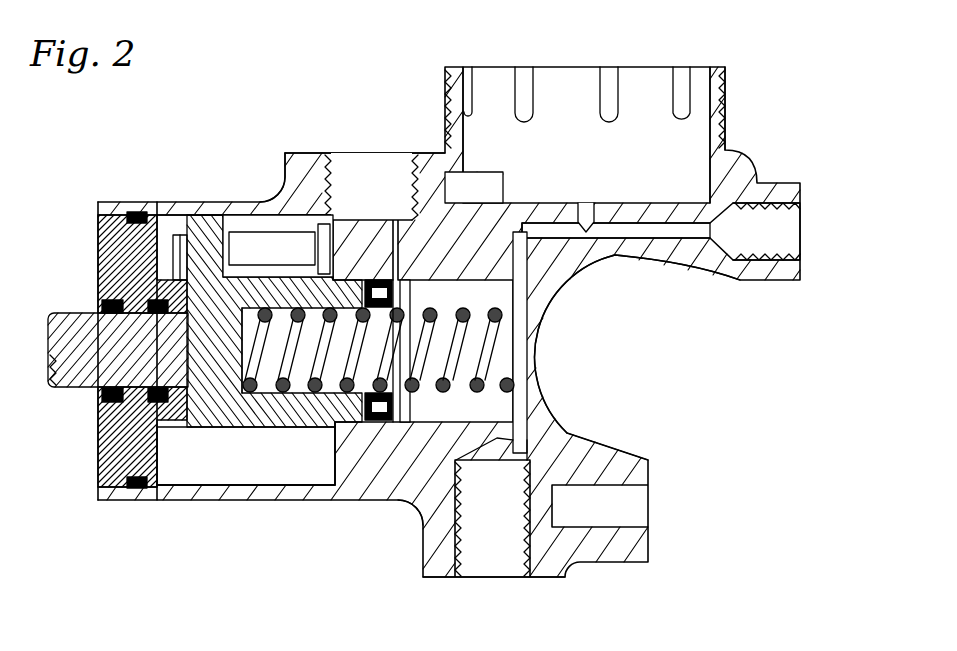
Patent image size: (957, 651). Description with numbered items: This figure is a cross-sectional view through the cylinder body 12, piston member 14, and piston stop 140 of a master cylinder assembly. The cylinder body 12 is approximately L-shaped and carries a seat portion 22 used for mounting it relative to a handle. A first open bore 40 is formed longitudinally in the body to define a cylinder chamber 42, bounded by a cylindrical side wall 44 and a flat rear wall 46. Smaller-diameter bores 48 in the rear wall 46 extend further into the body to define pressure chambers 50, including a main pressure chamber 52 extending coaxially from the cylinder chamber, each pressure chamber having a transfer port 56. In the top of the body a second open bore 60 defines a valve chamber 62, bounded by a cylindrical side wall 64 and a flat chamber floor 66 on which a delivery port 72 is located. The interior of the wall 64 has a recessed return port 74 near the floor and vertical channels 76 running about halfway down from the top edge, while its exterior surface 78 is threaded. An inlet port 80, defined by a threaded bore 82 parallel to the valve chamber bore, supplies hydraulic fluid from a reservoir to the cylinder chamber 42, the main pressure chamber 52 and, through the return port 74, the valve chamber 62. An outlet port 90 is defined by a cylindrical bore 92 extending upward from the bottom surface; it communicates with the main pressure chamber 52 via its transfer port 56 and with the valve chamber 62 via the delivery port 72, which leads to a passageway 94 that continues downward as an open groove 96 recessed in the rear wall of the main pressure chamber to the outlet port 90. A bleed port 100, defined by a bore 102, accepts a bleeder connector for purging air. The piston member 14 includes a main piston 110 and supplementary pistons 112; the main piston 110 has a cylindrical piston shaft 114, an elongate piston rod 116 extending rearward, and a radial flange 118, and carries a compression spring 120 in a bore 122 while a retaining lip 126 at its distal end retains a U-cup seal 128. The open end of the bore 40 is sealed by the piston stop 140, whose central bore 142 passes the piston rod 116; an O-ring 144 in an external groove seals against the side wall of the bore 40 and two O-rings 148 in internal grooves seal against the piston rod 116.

The cylinder body 12 is at (283, 170).
The piston member 14 is at (58, 383).
The seat portion 22 is at (596, 446).
The first open bore 40 is at (192, 490).
The cylinder chamber 42 is at (234, 490).
The cylindrical side wall 44 is at (272, 490).
The flat rear wall 46 is at (335, 460).
The smaller-diameter bores 48 is at (396, 430).
The pressure chambers 50 is at (426, 430).
The main pressure chamber 52 is at (516, 440).
The transfer port 56 is at (553, 420).
The second open bore 60 is at (708, 120).
The valve chamber 62 is at (706, 136).
The cylindrical side wall 64 is at (712, 188).
The chamber floor 66 is at (612, 207).
The delivery port 72 is at (585, 218).
The return port 74 is at (503, 191).
The vertical channels 76 is at (470, 96).
The exterior surface 78 is at (722, 82).
The inlet port 80 is at (370, 145).
The bore 82 is at (333, 188).
The outlet port 90 is at (505, 586).
The cylindrical bore 92 is at (523, 548).
The passageway 94 is at (575, 236).
The open groove 96 is at (535, 332).
The bleed port 100 is at (806, 244).
The bore 102 is at (742, 248).
The main piston 110 is at (228, 428).
The supplementary pistons 112 is at (284, 257).
The piston shaft 114 is at (254, 430).
The piston rod 116 is at (78, 395).
The flange 118 is at (192, 216).
The compression spring 120 is at (466, 310).
The bore 122 is at (313, 397).
The retaining lip 126 is at (412, 402).
The U-cup seal 128 is at (428, 294).
The piston stop 140 is at (94, 462).
The central bore 142 is at (113, 322).
The O-ring 144 is at (136, 492).
The O-rings 148 is at (113, 400).